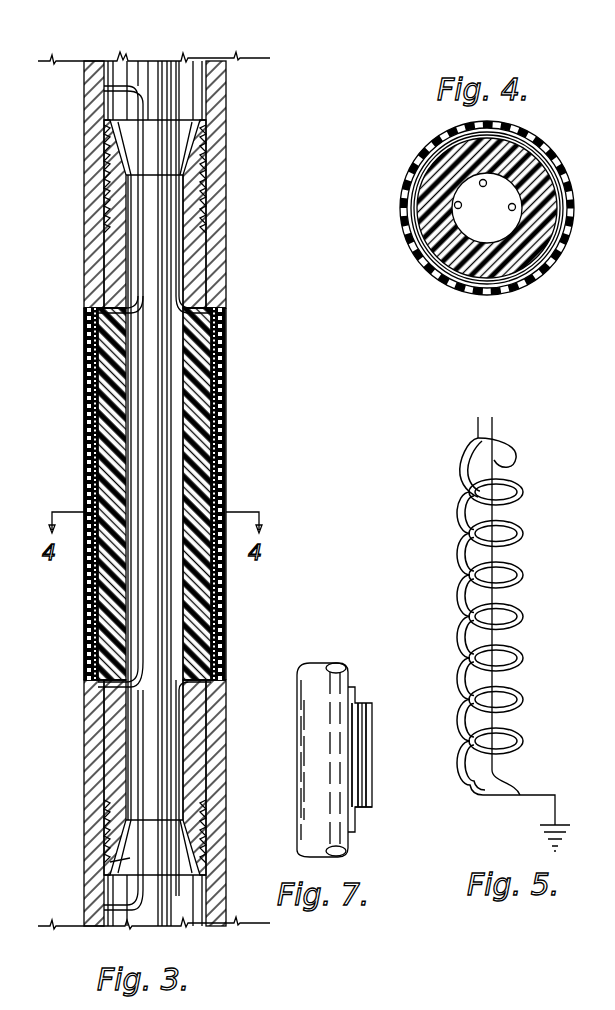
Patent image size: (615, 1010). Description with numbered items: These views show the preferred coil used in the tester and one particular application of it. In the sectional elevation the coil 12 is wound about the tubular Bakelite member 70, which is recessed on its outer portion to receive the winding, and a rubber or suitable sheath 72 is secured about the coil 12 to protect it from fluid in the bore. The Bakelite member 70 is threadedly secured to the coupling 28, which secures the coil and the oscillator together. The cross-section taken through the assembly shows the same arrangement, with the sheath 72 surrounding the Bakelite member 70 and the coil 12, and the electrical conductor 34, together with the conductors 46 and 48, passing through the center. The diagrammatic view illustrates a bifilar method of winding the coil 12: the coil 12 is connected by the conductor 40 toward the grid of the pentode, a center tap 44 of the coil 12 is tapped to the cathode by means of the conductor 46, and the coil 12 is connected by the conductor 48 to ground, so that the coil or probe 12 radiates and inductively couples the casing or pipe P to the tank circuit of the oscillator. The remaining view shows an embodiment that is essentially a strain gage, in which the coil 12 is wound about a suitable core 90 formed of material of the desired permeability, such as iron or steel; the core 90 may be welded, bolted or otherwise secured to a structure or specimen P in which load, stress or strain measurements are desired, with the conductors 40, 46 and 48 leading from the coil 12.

In FIG. 3, the coil 12 is at (213, 426).
In FIG. 4, the coil 12 is at (560, 192).
In FIG. 5, the coil 12 is at (516, 584).
In FIG. 7, the coil 12 is at (372, 760).
In FIG. 3, the coupling 28 is at (214, 95).
In FIG. 3, the electrical conductor 34 is at (160, 61).
In FIG. 4, the electrical conductor 34 is at (478, 186).
In FIG. 3, the conductor 40 is at (148, 66).
In FIG. 5, the conductor 40 is at (478, 424).
In FIG. 7, the conductor 40 is at (372, 706).
In FIG. 5, the center tap 44 is at (500, 462).
In FIG. 3, the conductor 46 is at (177, 62).
In FIG. 4, the conductor 46 is at (512, 211).
In FIG. 5, the conductor 46 is at (493, 425).
In FIG. 7, the conductor 46 is at (374, 708).
In FIG. 3, the conductor 48 is at (137, 862).
In FIG. 4, the conductor 48 is at (460, 208).
In FIG. 5, the conductor 48 is at (537, 797).
In FIG. 7, the conductor 48 is at (372, 806).
In FIG. 3, the tubular Bakelite member 70 is at (203, 379).
In FIG. 4, the tubular Bakelite member 70 is at (543, 230).
In FIG. 3, the sheath 72 is at (217, 348).
In FIG. 4, the sheath 72 is at (551, 158).
In FIG. 7, the core 90 is at (358, 705).
In FIG. 7, the casing or pipe P is at (297, 725).